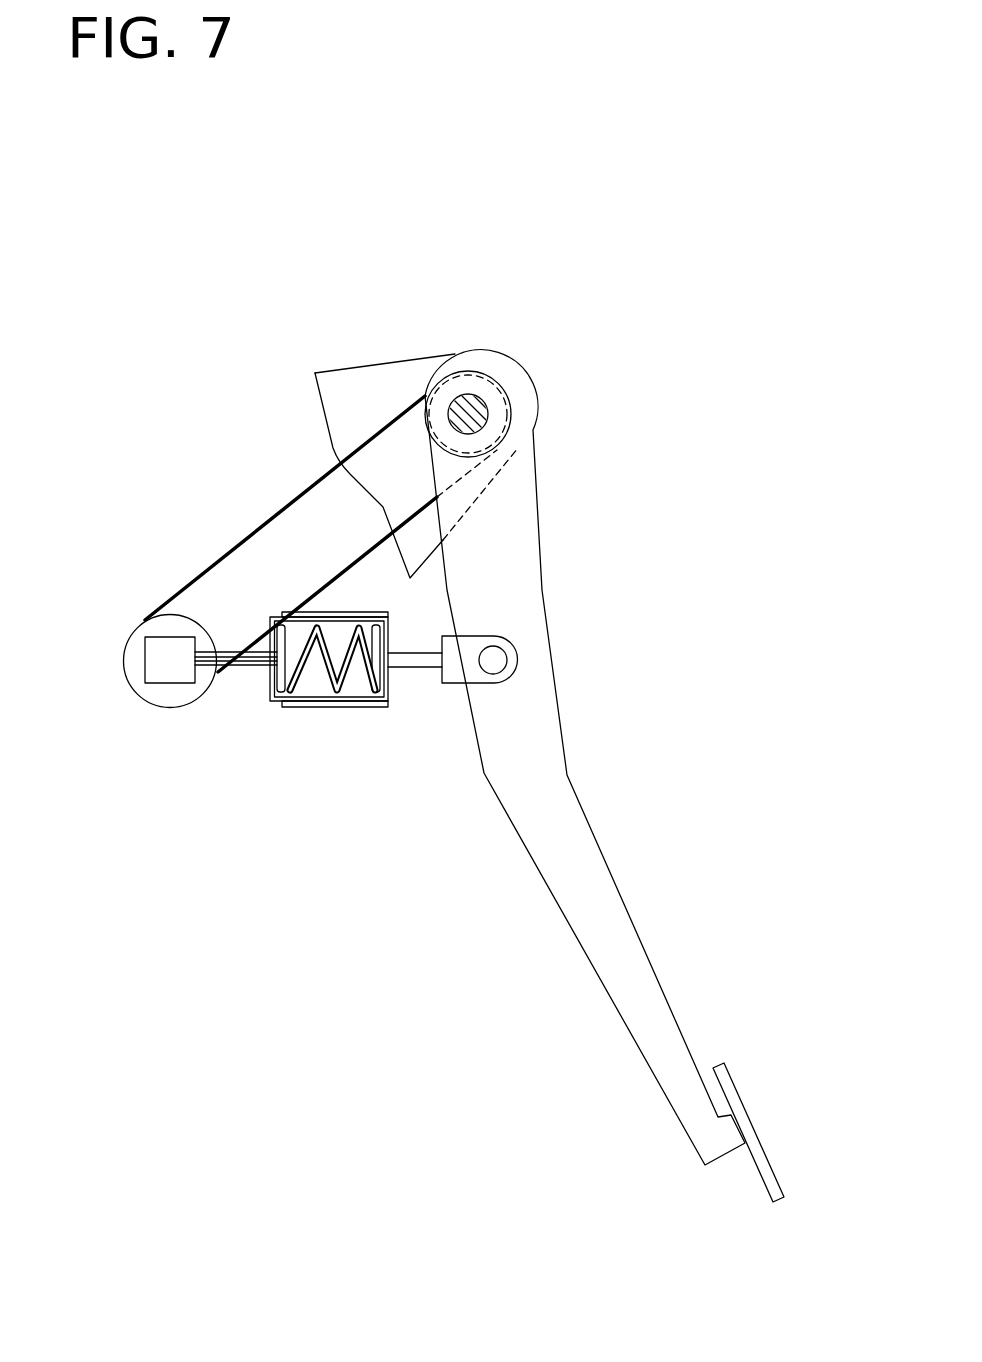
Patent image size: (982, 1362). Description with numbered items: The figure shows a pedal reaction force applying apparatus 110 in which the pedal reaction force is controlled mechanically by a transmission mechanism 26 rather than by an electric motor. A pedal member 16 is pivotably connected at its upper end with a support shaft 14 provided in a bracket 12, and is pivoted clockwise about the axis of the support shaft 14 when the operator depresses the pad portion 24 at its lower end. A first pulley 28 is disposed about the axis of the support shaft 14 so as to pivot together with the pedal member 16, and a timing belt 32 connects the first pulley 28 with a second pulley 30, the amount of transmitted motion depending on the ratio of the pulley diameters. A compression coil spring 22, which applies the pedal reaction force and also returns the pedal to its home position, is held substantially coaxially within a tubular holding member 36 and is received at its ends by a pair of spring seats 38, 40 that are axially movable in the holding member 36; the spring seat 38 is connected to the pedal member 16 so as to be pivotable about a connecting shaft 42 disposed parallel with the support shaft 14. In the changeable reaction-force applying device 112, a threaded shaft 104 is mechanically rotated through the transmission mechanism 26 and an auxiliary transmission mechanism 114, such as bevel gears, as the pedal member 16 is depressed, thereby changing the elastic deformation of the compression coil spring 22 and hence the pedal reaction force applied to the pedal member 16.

The pedal reaction force applying apparatus 110 is at (570, 718).
The bracket 12 is at (368, 385).
The support shaft 14 is at (470, 412).
The pedal member 16 is at (577, 850).
The compression coil spring 22 is at (350, 678).
The pad portion 24 is at (747, 1133).
The transmission mechanism 26 is at (277, 541).
The first pulley 28 is at (469, 392).
The second pulley 30 is at (155, 628).
The timing belt 32 is at (310, 490).
The tubular holding member 36 is at (315, 707).
The spring seat 38 is at (390, 688).
The spring seat 40 is at (270, 698).
The connecting shaft 42 is at (493, 660).
The threaded shaft 104 is at (245, 662).
The changeable reaction-force applying device 112 is at (252, 735).
The auxiliary transmission mechanism 114 is at (158, 658).